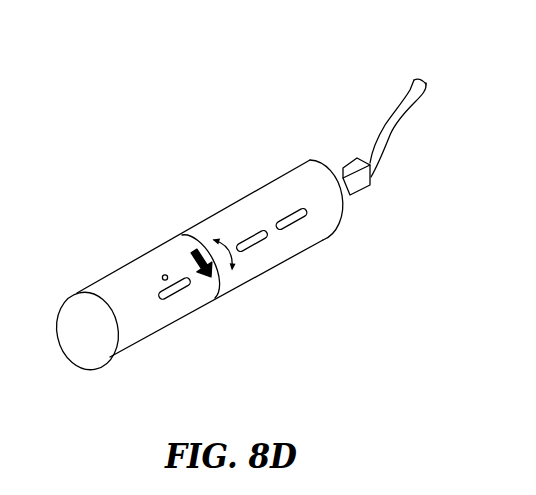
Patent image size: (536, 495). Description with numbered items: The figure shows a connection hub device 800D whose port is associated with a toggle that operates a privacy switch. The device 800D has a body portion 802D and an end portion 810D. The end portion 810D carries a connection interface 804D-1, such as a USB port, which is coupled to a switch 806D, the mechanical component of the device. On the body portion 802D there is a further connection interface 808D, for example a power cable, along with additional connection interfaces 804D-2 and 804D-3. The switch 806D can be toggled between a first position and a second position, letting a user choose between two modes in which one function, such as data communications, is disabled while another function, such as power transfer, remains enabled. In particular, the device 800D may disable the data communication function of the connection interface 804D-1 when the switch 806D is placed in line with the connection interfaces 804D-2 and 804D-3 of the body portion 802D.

The connection hub device 800D is at (164, 114).
The body portion 802D is at (232, 204).
The connection interface 804D-1 is at (173, 302).
The connection interface 804D-2 is at (257, 252).
The connection interface 804D-3 is at (293, 230).
The switch 806D is at (201, 257).
The connection interface 808D is at (403, 83).
The end portion 810D is at (75, 297).